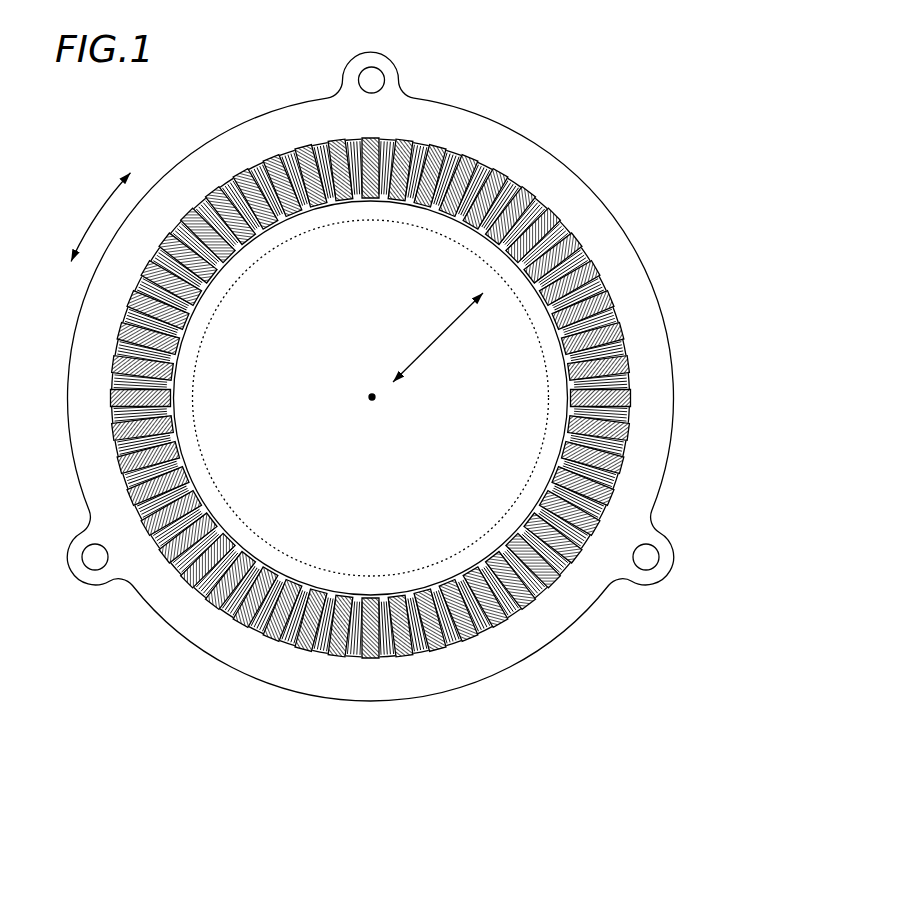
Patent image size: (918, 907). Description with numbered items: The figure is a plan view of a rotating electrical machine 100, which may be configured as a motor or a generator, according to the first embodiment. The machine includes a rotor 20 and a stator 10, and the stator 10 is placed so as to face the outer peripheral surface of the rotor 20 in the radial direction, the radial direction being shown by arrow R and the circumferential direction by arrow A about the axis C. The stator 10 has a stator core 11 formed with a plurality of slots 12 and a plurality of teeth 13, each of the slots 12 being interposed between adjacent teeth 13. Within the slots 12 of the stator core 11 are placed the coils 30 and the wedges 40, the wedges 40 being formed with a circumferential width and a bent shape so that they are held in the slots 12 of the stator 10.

The rotating electrical machine 100 is at (642, 132).
The stator 10 is at (450, 376).
The stator core 11 is at (637, 270).
The slots 12 is at (553, 212).
The teeth 13 is at (570, 233).
The rotor 20 is at (620, 343).
The coils 30 is at (625, 360).
The wedges 40 is at (475, 176).